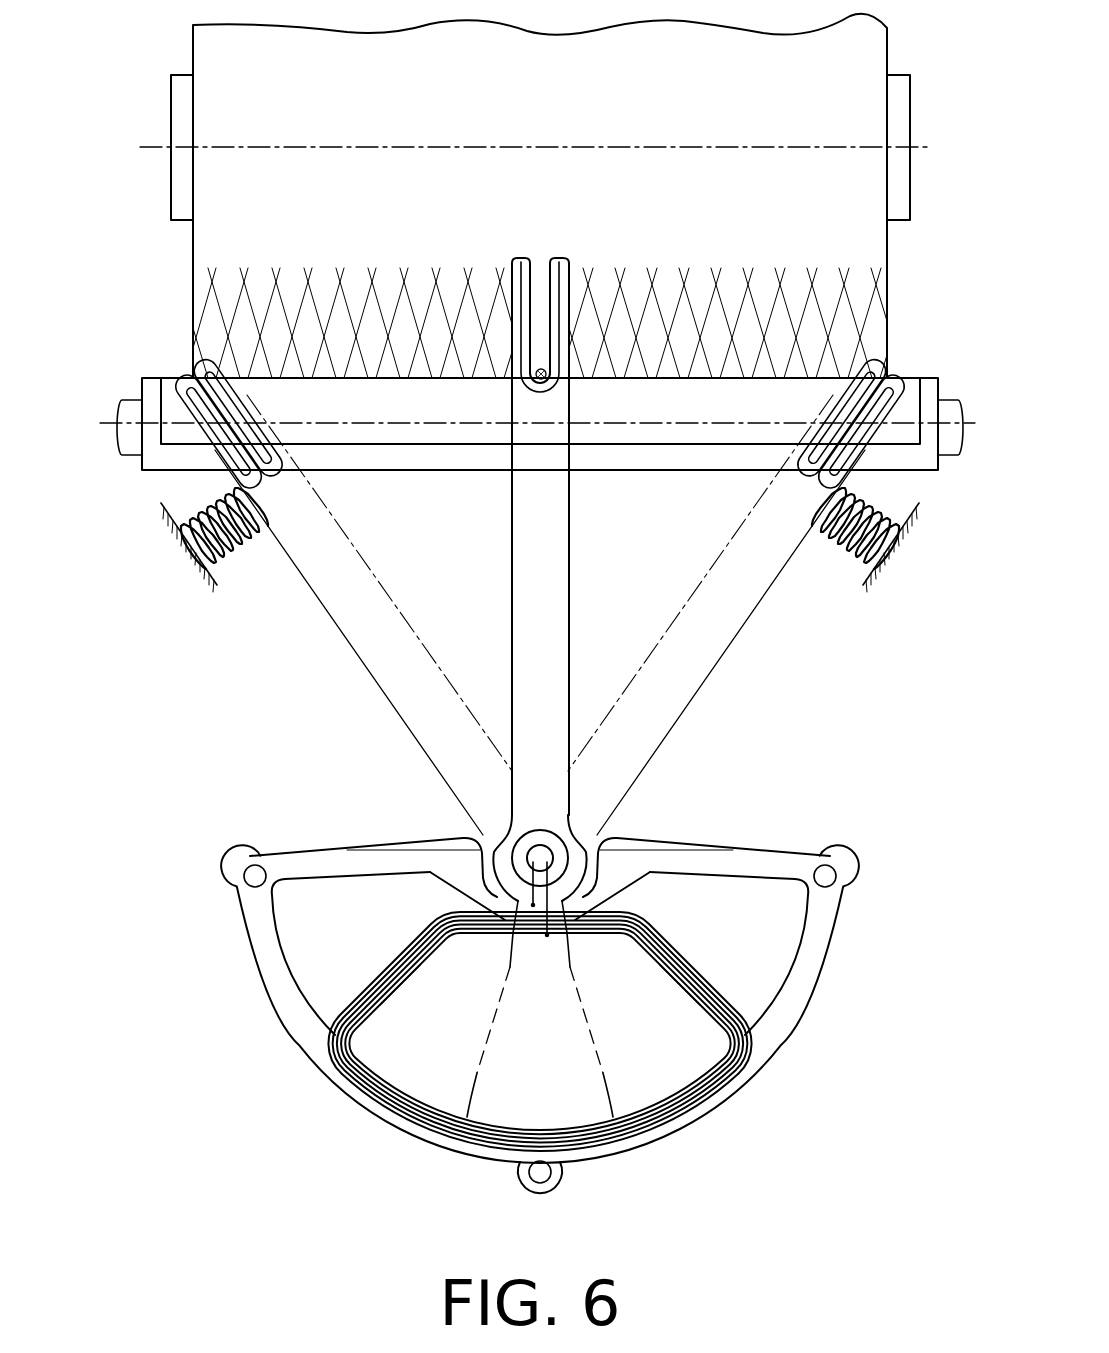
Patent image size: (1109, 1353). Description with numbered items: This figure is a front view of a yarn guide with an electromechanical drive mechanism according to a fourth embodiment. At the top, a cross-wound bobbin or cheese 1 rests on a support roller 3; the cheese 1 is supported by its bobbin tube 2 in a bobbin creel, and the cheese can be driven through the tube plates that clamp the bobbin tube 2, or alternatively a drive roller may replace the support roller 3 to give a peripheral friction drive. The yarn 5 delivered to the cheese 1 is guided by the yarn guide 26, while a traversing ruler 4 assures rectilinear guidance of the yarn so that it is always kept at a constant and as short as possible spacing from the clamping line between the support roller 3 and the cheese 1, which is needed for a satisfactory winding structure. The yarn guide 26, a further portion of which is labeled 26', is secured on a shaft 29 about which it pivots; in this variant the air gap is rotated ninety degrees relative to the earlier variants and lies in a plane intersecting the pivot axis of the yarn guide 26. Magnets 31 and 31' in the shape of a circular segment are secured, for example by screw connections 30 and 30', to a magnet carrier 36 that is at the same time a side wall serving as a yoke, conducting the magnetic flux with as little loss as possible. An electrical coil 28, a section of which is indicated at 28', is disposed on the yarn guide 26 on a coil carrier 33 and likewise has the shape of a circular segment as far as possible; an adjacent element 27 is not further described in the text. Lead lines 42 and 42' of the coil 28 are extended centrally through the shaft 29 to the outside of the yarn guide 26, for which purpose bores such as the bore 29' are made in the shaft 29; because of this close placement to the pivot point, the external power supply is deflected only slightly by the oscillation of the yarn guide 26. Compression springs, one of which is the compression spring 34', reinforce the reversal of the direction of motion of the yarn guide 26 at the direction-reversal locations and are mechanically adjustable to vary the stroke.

The cheese 1 is at (867, 230).
The bobbin tube 2 is at (900, 188).
The support roller 3 is at (925, 458).
The traversing ruler 4 is at (703, 402).
The yarn 5 is at (547, 377).
The yarn guide 26 is at (579, 536).
The right arm 26' is at (736, 597).
The hub holder 27 is at (617, 900).
The electrical coil 28 is at (605, 1031).
The right coil side 28' is at (707, 958).
The shaft 29 is at (516, 763).
The bore 29' is at (633, 837).
The screw connection 30 is at (870, 869).
The screw connection 30' is at (602, 1176).
The magnet 31 is at (574, 1004).
The magnet 31' is at (540, 1009).
The coil carrier 33 is at (735, 1105).
The compression spring 34' is at (865, 573).
The magnet carrier 36 is at (800, 863).
The lead line 42 is at (583, 923).
The lead line 42' is at (462, 885).